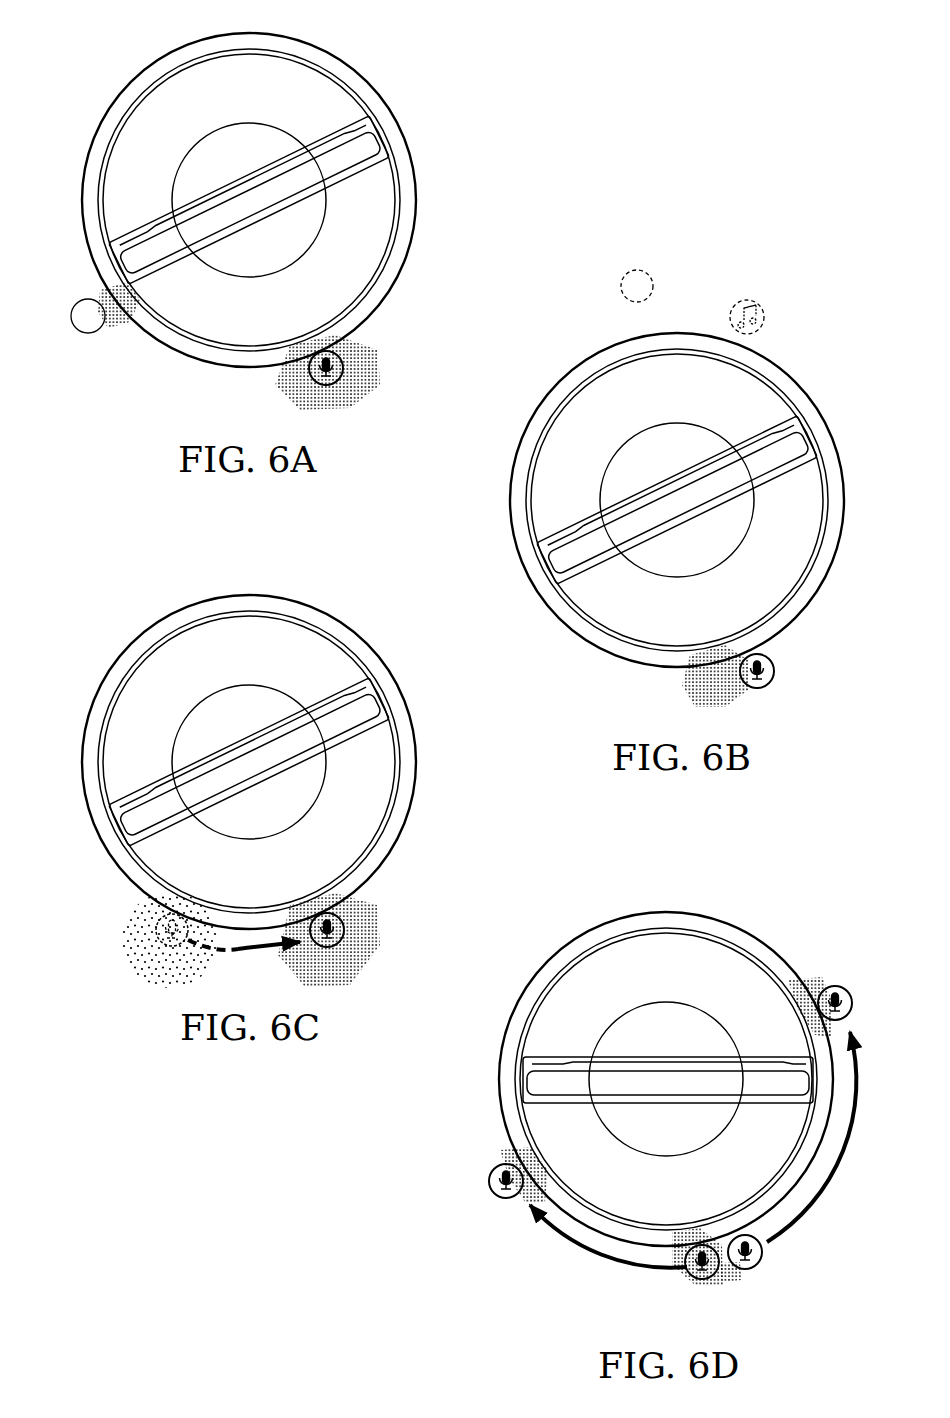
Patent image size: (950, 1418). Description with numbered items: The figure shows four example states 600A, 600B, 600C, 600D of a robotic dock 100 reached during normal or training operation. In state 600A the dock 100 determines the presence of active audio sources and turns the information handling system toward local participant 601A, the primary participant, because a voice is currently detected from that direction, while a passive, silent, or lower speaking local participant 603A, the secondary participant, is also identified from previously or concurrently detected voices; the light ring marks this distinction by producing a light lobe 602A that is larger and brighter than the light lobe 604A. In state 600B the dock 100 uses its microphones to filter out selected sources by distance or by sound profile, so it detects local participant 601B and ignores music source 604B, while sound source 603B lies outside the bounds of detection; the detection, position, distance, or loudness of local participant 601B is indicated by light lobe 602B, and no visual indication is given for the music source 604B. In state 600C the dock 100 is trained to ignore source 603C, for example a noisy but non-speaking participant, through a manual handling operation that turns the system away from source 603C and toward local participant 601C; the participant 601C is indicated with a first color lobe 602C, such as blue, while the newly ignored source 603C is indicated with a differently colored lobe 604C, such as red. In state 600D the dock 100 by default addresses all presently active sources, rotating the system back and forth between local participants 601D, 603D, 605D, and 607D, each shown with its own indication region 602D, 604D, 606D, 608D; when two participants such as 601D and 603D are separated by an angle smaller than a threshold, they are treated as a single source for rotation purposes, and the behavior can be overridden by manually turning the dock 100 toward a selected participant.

In FIG. 6A, the dock 100 is at (167, 70).
In FIG. 6B, the dock 100 is at (598, 376).
In FIG. 6C, the dock 100 is at (168, 636).
In FIG. 6D, the dock 100 is at (590, 955).
In FIG. 6A, the robotic dock state 600A is at (248, 232).
In FIG. 6A, the local participant 601A is at (330, 386).
In FIG. 6A, the light lobe 602A is at (388, 373).
In FIG. 6A, the local participant 603A is at (80, 331).
In FIG. 6A, the light lobe 604A is at (128, 336).
In FIG. 6B, the robotic dock state 600B is at (699, 456).
In FIG. 6B, the local participant 601B is at (775, 672).
In FIG. 6B, the light lobe 602B is at (680, 690).
In FIG. 6B, the sound source 603B is at (633, 270).
In FIG. 6B, the music source 604B is at (748, 300).
In FIG. 6C, the robotic dock state 600C is at (247, 794).
In FIG. 6C, the local participant 601C is at (333, 947).
In FIG. 6C, the first color lobe 602C is at (383, 933).
In FIG. 6C, the source 603C is at (165, 945).
In FIG. 6C, the lobe 604C is at (118, 936).
In FIG. 6D, the robotic dock state 600D is at (645, 1095).
In FIG. 6D, the local participant 601D is at (702, 1283).
In FIG. 6D, the microphone sensitivity region 602D is at (665, 1258).
In FIG. 6D, the local participant 603D is at (762, 1255).
In FIG. 6D, the second microphone sensitivity region 604D is at (738, 1286).
In FIG. 6D, the local participant 605D is at (490, 1188).
In FIG. 6D, the third microphone sensitivity region 606D is at (493, 1154).
In FIG. 6D, the local participant 607D is at (867, 970).
In FIG. 6D, the fourth microphone sensitivity region 608D is at (808, 972).